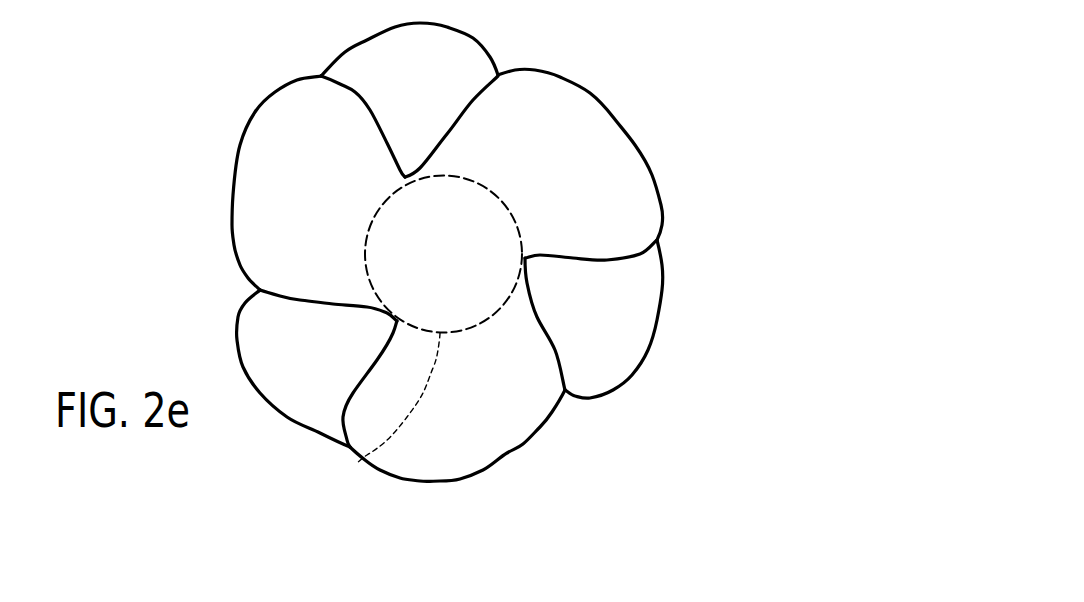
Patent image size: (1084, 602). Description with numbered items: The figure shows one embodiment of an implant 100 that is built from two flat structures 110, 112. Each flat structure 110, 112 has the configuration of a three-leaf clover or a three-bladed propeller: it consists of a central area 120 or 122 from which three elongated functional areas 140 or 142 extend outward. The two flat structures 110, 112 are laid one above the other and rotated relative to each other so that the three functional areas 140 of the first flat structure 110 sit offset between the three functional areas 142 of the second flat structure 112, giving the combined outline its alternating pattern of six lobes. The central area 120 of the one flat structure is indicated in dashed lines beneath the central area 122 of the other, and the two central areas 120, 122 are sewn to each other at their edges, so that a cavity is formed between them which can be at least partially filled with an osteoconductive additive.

The implant 100 is at (734, 61).
The flat structure 110 is at (660, 278).
The flat structure 112 is at (527, 448).
The central area 120 is at (363, 462).
The central area 122 is at (480, 222).
The functional area 140 is at (383, 55).
The functional area 142 is at (565, 98).